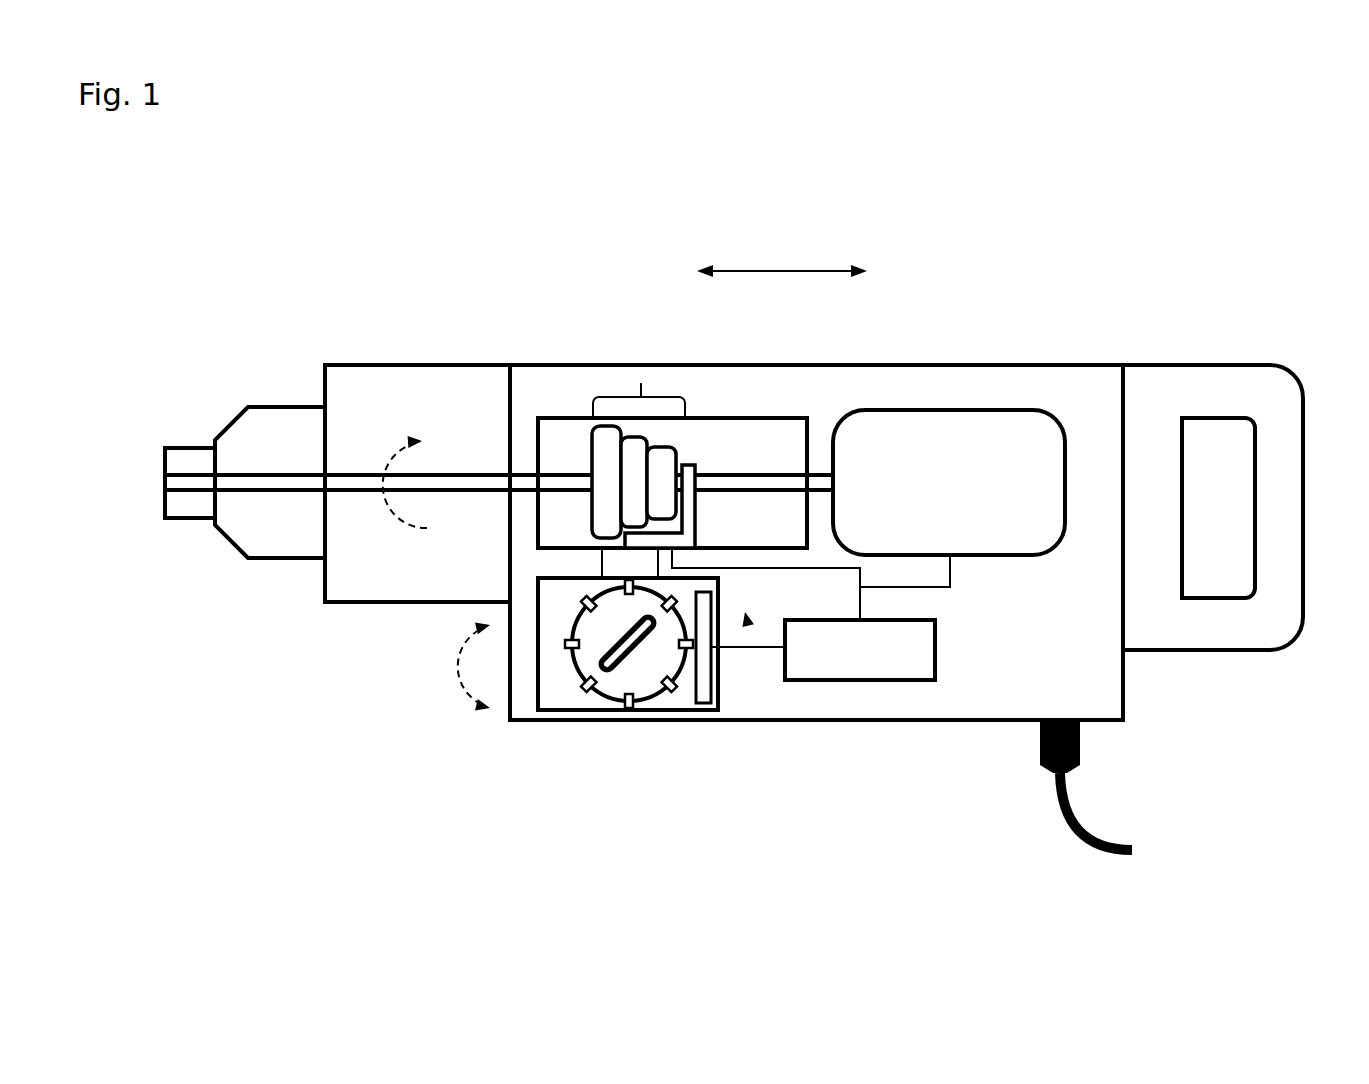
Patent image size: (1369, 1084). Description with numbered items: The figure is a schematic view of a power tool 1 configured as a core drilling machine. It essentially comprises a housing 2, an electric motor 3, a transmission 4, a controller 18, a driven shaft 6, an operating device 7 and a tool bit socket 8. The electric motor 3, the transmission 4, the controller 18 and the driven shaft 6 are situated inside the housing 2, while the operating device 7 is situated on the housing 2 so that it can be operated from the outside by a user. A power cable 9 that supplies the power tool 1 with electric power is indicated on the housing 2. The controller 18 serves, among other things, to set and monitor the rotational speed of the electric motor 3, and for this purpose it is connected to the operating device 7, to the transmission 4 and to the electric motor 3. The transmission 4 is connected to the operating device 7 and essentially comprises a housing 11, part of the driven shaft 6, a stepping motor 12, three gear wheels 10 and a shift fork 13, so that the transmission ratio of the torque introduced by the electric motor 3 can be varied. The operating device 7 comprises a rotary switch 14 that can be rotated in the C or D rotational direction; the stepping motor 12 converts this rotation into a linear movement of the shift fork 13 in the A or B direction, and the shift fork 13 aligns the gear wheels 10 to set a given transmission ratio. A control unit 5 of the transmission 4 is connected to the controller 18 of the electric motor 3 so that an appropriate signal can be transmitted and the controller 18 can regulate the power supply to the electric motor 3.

The power tool 1 is at (1246, 201).
The housing 2 is at (1085, 687).
The electric motor 3 is at (955, 438).
The transmission 4 is at (560, 430).
The control unit 5 is at (703, 703).
The driven shaft 6 is at (770, 483).
The operating device 7 is at (563, 693).
The tool bit socket 8 is at (262, 426).
The power cable 9 is at (1087, 840).
The gear wheels 10 is at (641, 393).
The housing 11 is at (749, 628).
The stepping motor 12 is at (638, 668).
The shift fork 13 is at (690, 470).
The rotary switch 14 is at (608, 672).
The controller 18 is at (867, 665).